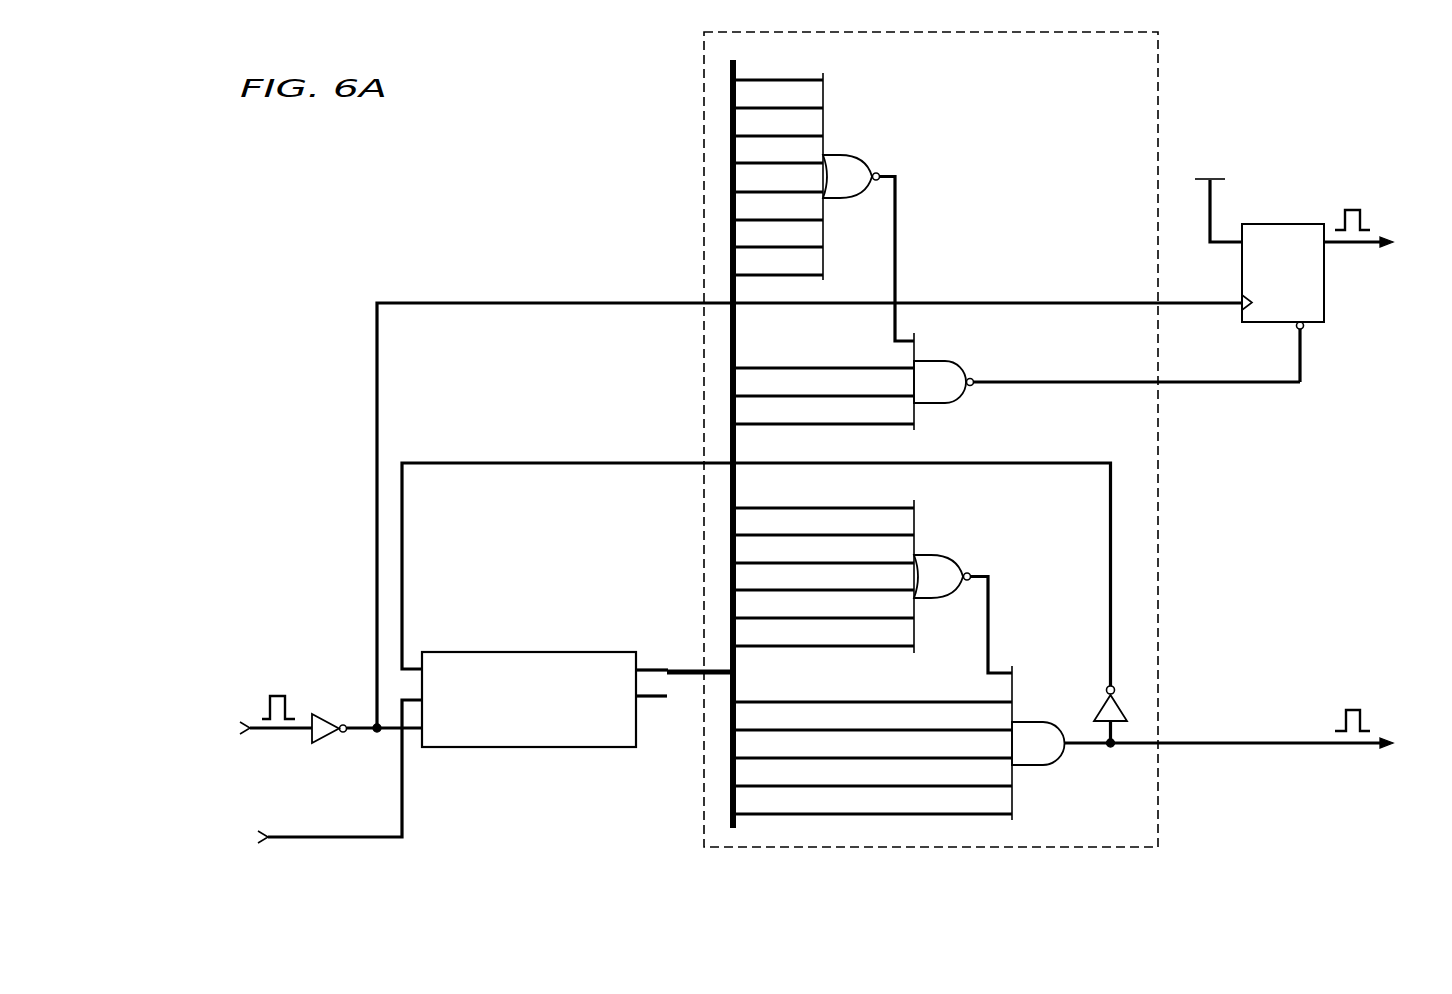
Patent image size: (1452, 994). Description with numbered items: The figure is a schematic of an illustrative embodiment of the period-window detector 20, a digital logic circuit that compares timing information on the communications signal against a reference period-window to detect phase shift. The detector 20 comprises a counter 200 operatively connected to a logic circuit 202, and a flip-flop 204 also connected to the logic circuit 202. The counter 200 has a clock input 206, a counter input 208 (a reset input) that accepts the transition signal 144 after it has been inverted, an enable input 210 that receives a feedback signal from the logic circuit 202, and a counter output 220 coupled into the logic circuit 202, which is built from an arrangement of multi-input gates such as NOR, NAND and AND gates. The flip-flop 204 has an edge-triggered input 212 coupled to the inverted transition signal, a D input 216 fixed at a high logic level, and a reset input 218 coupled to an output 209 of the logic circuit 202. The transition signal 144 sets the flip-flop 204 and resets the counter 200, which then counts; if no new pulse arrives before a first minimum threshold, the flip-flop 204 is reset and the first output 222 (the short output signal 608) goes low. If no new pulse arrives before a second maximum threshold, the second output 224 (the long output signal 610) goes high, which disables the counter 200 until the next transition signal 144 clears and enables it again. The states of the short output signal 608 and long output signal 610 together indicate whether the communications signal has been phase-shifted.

The period-window detector 20 is at (329, 137).
The transition signal 144 is at (282, 690).
The counter 200 is at (524, 650).
The logic circuit 202 is at (1160, 72).
The flip-flop 204 is at (1300, 224).
The clock input 206 is at (300, 838).
The counter input 208 is at (348, 733).
The output of the logic circuit 209 is at (1022, 380).
The enable input 210 is at (402, 548).
The edge-triggered input 212 is at (1220, 304).
The D input 216 is at (1212, 205).
The reset input 218 is at (1304, 328).
The counter output 220 is at (684, 663).
The first output 222 is at (1360, 245).
The second output 224 is at (1235, 745).
The short output signal 608 is at (1356, 206).
The long output signal 610 is at (1355, 707).